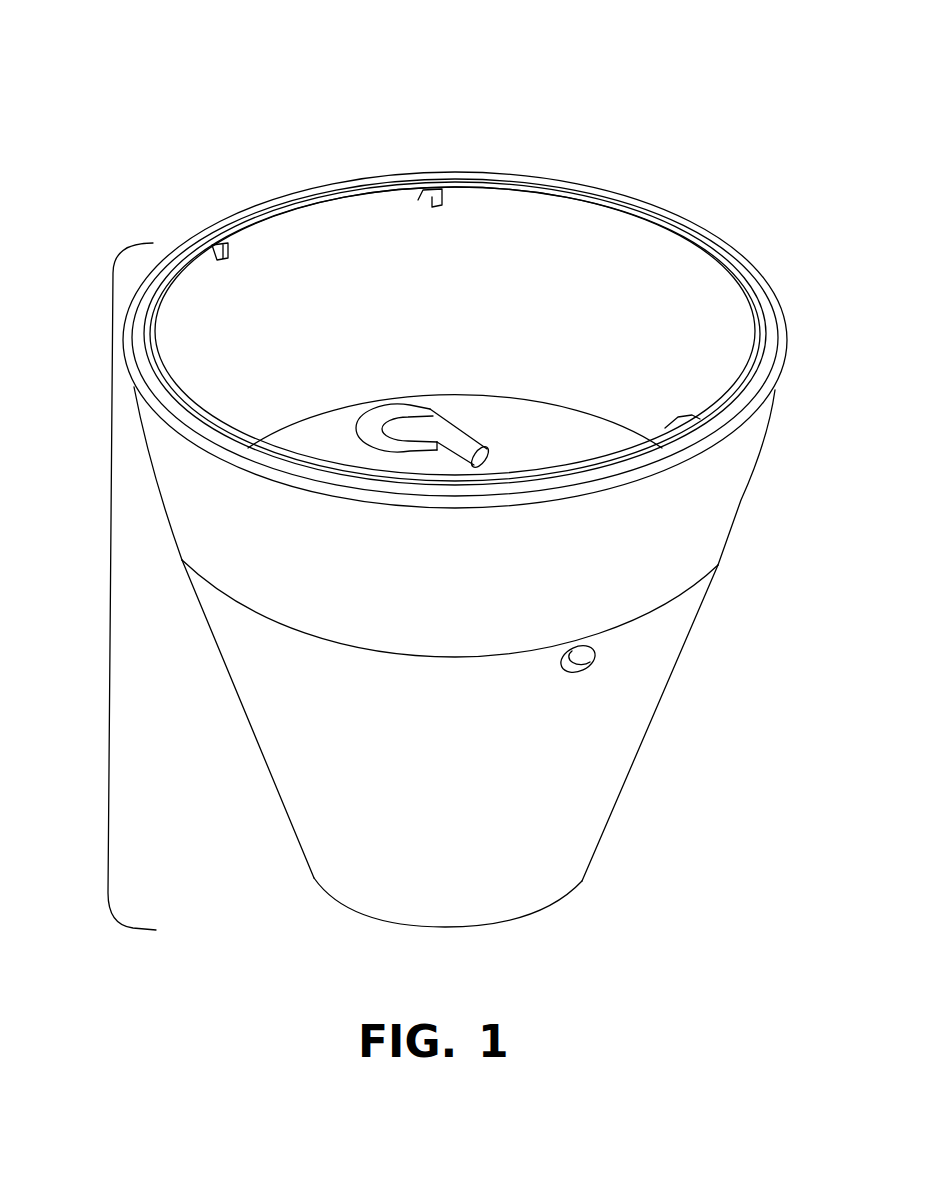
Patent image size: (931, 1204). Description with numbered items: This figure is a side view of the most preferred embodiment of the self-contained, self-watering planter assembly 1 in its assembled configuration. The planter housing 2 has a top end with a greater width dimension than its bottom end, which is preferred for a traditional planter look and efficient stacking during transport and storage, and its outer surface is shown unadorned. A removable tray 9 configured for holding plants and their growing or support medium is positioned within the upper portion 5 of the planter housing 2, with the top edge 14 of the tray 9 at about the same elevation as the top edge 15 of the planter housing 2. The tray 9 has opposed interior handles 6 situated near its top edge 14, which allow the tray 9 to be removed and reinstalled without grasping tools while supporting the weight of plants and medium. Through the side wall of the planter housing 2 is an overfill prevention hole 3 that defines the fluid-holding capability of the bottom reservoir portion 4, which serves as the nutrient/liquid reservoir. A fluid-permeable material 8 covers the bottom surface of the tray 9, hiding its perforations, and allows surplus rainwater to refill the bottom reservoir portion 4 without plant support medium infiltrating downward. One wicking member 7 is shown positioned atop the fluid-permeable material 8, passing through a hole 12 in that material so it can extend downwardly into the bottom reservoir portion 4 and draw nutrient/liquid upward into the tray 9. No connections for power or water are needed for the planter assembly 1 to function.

The self-watering planter assembly 1 is at (152, 59).
The planter housing 2 is at (104, 661).
The overfill prevention hole 3 is at (607, 646).
The bottom portion 4 is at (621, 747).
The upper portion 5 is at (725, 500).
The interior handle 6 is at (423, 192).
The wicking member 7 is at (407, 413).
The fluid-permeable material 8 is at (307, 427).
The removable tray 9 is at (582, 228).
The hole in fluid-permeable material 12 is at (503, 438).
The top edge of tray 14 is at (751, 266).
The top edge of planter housing 15 is at (696, 205).